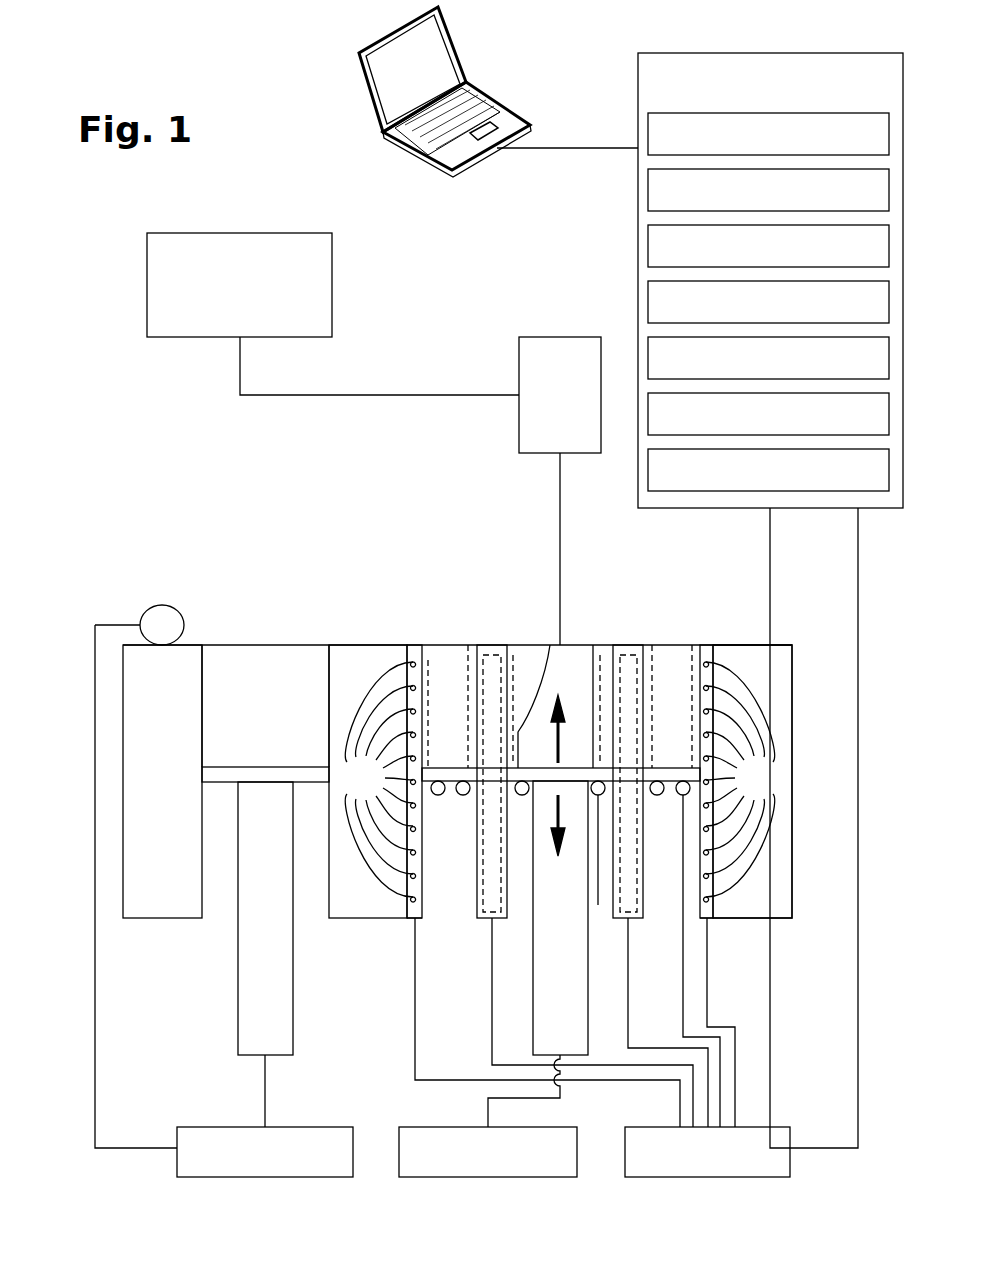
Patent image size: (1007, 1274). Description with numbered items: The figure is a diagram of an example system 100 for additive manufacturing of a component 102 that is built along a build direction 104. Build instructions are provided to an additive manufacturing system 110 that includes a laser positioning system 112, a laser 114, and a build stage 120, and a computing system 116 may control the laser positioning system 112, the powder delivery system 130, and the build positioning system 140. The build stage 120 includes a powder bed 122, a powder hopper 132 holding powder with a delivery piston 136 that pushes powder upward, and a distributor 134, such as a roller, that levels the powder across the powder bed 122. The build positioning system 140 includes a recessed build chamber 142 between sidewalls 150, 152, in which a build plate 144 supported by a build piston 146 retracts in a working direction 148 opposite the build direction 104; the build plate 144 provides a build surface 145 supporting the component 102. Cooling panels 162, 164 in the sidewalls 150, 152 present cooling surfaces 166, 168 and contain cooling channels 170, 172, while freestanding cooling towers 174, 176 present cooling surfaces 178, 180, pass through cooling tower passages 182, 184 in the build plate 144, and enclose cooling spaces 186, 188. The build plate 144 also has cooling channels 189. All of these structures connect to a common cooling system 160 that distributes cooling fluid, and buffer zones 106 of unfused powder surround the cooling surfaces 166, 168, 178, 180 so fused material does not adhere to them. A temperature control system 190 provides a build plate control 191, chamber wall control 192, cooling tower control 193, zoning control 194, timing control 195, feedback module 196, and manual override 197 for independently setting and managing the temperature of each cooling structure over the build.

The system 100 is at (301, 142).
The component 102 is at (535, 652).
The build direction 104 is at (560, 745).
The buffer zones 106 is at (428, 672).
The additive manufacturing system 110 is at (150, 413).
The laser positioning system 112 is at (242, 233).
The laser 114 is at (548, 337).
The computing system 116 is at (388, 36).
The build stage 120 is at (118, 610).
The powder bed 122 is at (785, 645).
The powder delivery system 130 is at (272, 1178).
The powder hopper 132 is at (292, 665).
The distributor 134 is at (178, 603).
The delivery piston 136 is at (240, 942).
The build positioning system 140 is at (500, 1178).
The build chamber 142 is at (542, 645).
The build plate 144 is at (425, 790).
The build surface 145 is at (447, 768).
The build piston 146 is at (533, 972).
The working direction 148 is at (543, 803).
The sidewall 150 is at (375, 665).
The sidewall 152 is at (750, 665).
The cooling system 160 is at (728, 1178).
The cooling panel 162 is at (410, 925).
The cooling panel 164 is at (712, 925).
The cooling surface 166 is at (422, 650).
The cooling surface 168 is at (682, 645).
The cooling channels 170 is at (377, 779).
The cooling channels 172 is at (744, 779).
The cooling tower 174 is at (487, 645).
The cooling tower 176 is at (620, 645).
The cooling surface 178 is at (473, 682).
The cooling surface 180 is at (645, 692).
The cooling tower passage 182 is at (490, 788).
The cooling tower passage 184 is at (627, 773).
The cooling space 186 is at (490, 880).
The cooling space 188 is at (633, 905).
The cooling channels 189 is at (598, 897).
The temperature control system 190 is at (768, 53).
The build plate control 191 is at (768, 134).
The chamber wall control 192 is at (768, 190).
The cooling tower control 193 is at (768, 246).
The zoning control 194 is at (768, 302).
The timing control 195 is at (768, 358).
The feedback module 196 is at (768, 414).
The manual override 197 is at (768, 470).